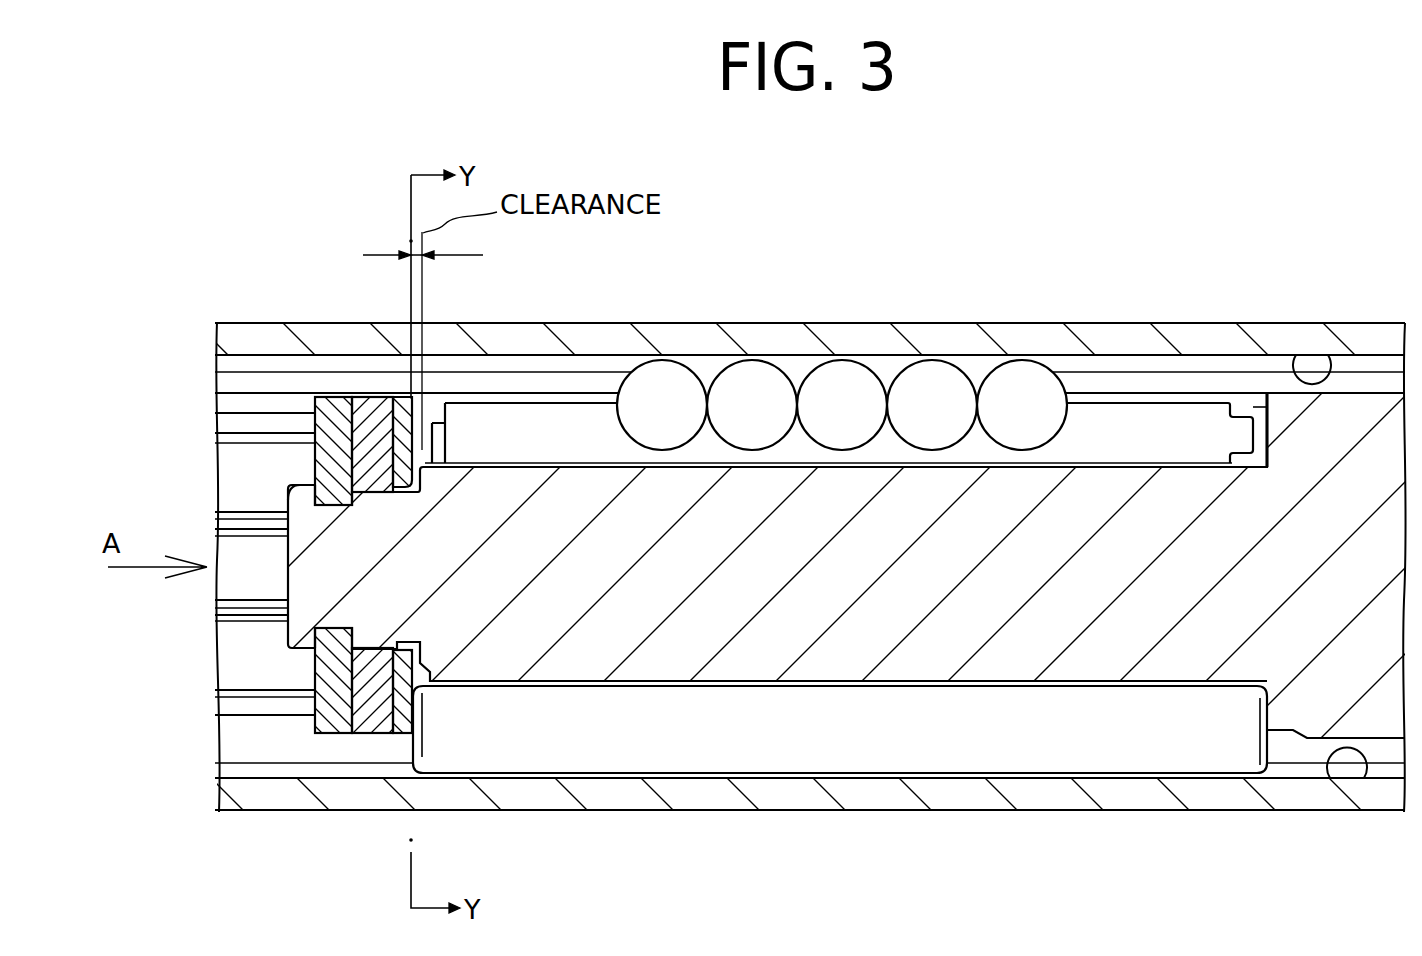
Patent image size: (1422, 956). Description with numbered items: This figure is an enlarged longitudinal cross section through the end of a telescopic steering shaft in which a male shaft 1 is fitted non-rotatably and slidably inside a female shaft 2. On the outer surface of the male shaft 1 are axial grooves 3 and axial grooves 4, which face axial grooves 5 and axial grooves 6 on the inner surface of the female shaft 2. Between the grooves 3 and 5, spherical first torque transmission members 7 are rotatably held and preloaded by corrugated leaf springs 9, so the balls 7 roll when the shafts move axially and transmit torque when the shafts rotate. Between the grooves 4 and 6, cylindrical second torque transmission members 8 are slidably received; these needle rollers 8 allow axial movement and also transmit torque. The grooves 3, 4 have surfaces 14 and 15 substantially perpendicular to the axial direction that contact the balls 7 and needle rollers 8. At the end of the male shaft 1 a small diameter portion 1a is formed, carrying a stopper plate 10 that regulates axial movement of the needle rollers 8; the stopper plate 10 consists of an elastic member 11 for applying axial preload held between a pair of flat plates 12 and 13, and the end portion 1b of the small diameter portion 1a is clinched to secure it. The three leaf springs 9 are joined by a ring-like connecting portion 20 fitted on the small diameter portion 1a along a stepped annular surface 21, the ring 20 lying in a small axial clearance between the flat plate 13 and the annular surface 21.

The male shaft 1 is at (711, 642).
The small diameter portion 1a is at (320, 562).
The end portion 1b is at (290, 483).
The female shaft 2 is at (770, 812).
The axial grooves 3 is at (1087, 460).
The axial grooves 4 is at (1117, 683).
The axial grooves 5 is at (1310, 380).
The axial grooves 6 is at (1337, 752).
The first torque transmission members 7 is at (930, 388).
The second torque transmission members 8 is at (985, 740).
The leaf springs 9 is at (552, 425).
The stopper plate 10 is at (301, 578).
The elastic member 11 is at (373, 735).
The flat plate 12 is at (337, 735).
The flat plate 13 is at (453, 636).
The surface 14 is at (1267, 410).
The surface 15 is at (1272, 710).
The ring-like connecting portion 20 is at (398, 490).
The annular surface 21 is at (400, 642).